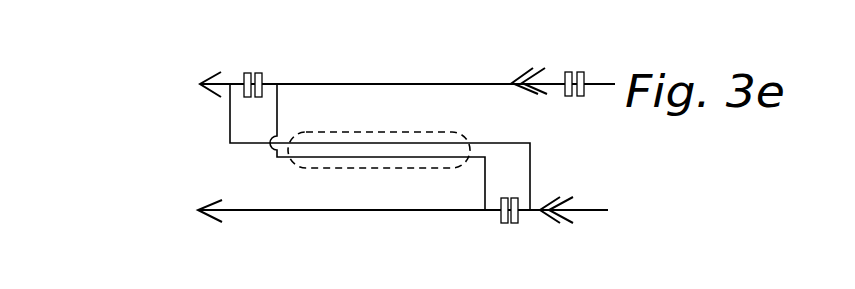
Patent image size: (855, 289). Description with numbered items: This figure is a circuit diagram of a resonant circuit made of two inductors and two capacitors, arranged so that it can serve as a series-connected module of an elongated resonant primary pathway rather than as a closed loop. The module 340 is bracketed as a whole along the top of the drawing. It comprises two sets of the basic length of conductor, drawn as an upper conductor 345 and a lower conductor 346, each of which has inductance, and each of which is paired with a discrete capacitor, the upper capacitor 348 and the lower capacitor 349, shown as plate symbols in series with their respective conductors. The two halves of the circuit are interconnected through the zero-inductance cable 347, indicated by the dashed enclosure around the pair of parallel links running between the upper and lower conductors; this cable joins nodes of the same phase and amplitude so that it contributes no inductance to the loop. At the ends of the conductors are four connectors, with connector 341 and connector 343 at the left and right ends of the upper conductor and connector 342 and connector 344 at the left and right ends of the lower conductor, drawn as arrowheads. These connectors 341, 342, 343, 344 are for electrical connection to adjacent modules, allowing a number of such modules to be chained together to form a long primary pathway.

The module 340 is at (577, 54).
The connector 341 is at (206, 106).
The connector 342 is at (212, 218).
The connector 343 is at (542, 72).
The connector 344 is at (585, 252).
The length of conductor 345 is at (343, 45).
The length of conductor 346 is at (293, 217).
The zero-inductance cable 347 is at (405, 108).
The discrete capacitor 348 is at (275, 61).
The discrete capacitor 349 is at (513, 228).